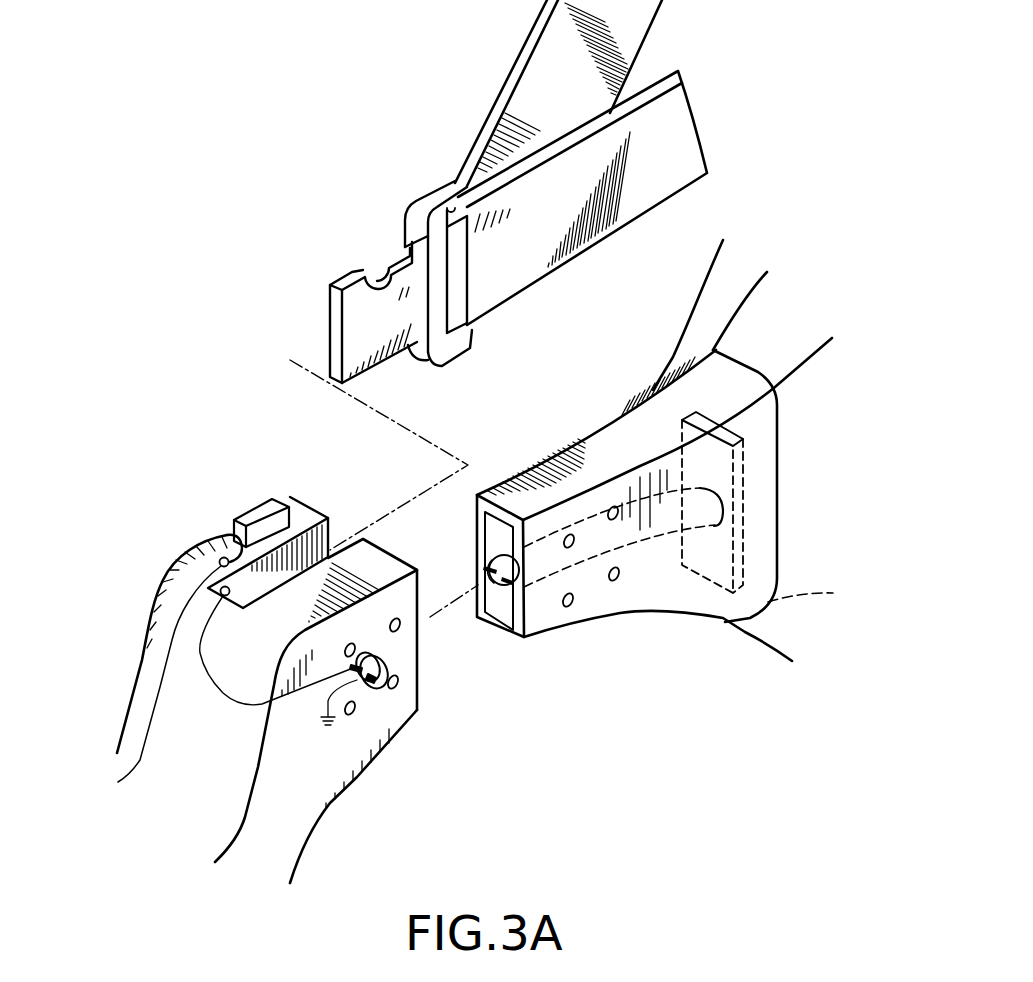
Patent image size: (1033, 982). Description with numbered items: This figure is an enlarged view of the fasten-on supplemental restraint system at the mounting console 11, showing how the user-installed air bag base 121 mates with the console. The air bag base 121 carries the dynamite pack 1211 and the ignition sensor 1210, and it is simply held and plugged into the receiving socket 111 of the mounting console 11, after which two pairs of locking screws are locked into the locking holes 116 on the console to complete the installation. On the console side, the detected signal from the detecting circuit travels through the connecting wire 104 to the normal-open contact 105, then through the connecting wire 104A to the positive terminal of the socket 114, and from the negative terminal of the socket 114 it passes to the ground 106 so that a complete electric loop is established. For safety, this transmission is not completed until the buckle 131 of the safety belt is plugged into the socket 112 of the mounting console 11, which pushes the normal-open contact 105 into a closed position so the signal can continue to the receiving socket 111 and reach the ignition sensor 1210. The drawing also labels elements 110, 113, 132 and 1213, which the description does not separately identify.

The mounting console 11 is at (163, 576).
The connecting wire 104 is at (143, 722).
The connecting wire 104A is at (213, 678).
The normal-open contact 105 is at (226, 534).
The ground 106 is at (360, 690).
The projection block 110 is at (302, 512).
The receiving socket 111 is at (372, 553).
The socket 112 is at (322, 540).
The chip / contact element 113 is at (257, 512).
The socket 114 is at (403, 680).
The locking holes 116 is at (400, 627).
The air bag base 121 is at (568, 458).
The ignition sensor 1210 is at (593, 563).
The dynamite pack 1211 is at (738, 473).
The mating connector 1213 is at (505, 587).
The buckle 131 is at (330, 312).
The buckle frame 132 is at (383, 264).